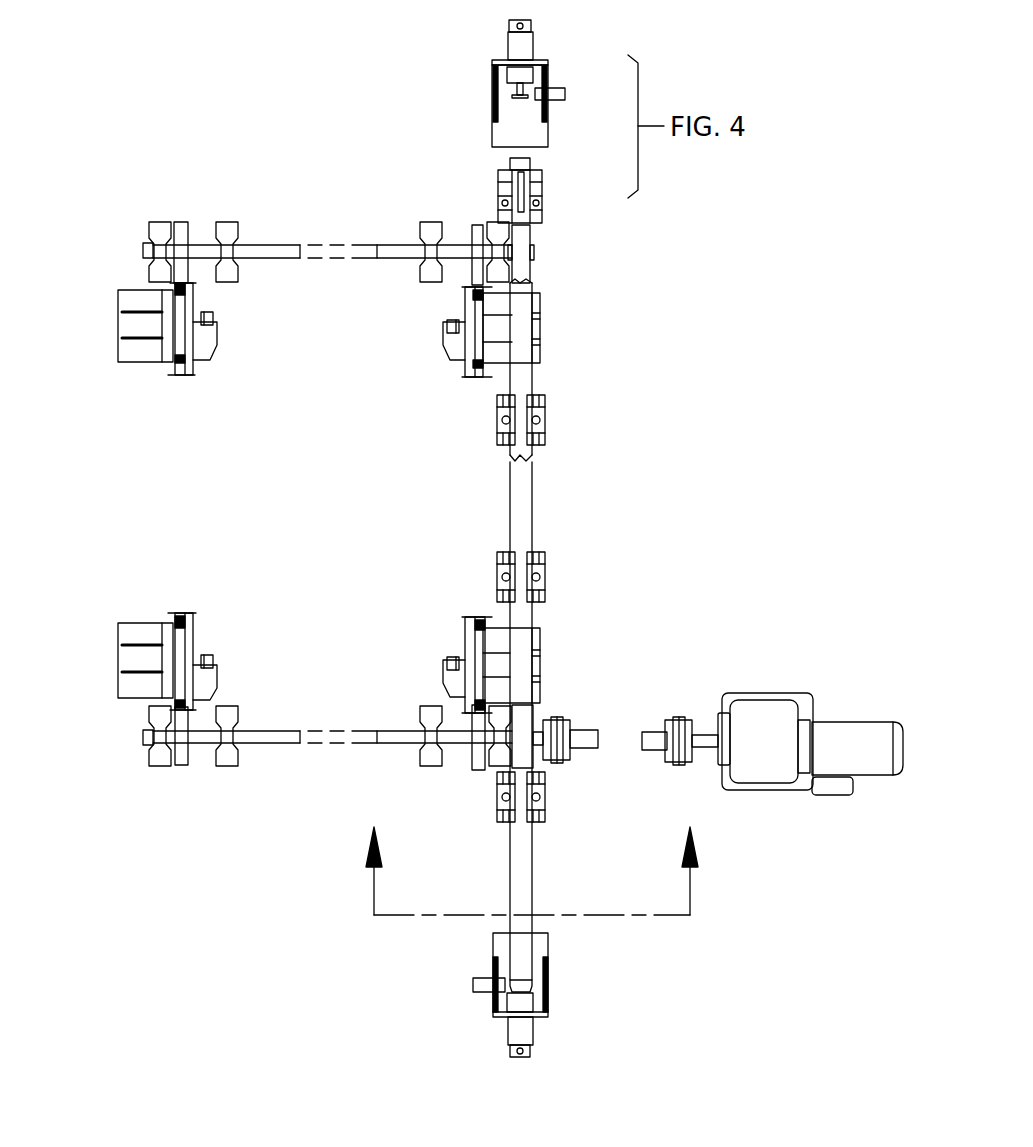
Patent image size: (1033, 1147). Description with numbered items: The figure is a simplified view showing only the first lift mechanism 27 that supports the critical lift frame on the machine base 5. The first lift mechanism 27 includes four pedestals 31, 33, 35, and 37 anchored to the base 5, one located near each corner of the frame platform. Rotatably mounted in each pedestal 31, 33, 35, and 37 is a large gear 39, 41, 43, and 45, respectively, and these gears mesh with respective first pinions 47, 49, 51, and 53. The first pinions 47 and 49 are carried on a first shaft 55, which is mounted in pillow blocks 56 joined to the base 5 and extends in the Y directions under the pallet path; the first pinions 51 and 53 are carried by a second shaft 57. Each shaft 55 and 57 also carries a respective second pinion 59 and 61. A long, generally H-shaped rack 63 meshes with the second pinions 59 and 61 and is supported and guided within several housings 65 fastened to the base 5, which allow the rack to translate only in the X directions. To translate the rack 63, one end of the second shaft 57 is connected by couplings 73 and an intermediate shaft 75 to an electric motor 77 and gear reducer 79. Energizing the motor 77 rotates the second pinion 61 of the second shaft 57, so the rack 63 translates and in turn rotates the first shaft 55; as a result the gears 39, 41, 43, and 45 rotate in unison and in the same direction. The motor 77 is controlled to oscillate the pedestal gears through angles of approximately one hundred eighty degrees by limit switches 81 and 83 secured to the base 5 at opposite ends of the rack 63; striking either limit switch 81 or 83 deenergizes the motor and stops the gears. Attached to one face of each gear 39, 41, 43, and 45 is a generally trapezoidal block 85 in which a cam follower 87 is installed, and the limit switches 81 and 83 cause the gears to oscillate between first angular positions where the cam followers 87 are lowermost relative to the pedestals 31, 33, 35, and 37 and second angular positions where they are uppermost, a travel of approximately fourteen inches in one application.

The machine base 5 is at (532, 887).
The first lift mechanism 27 is at (133, 389).
The pedestal 31 is at (135, 322).
The pedestal 33 is at (537, 335).
The pedestal 35 is at (537, 640).
The pedestal 37 is at (128, 660).
The large gear 39 is at (181, 340).
The large gear 41 is at (476, 380).
The large gear 43 is at (476, 655).
The large gear 45 is at (183, 613).
The first pinion 47 is at (181, 232).
The first pinion 49 is at (477, 228).
The first pinion 51 is at (478, 770).
The first pinion 53 is at (182, 765).
The first shaft 55 is at (261, 250).
The pillow block 56 is at (228, 226).
The second shaft 57 is at (266, 745).
The second pinion 59 is at (531, 241).
The second pinion 61 is at (547, 695).
The rack 63 is at (527, 528).
The housing 65 is at (545, 560).
The coupling 73 is at (567, 722).
The intermediate shaft 75 is at (590, 742).
The electric motor 77 is at (880, 740).
The gear reducer 79 is at (763, 720).
The limit switch 81 is at (517, 1032).
The limit switch 83 is at (525, 42).
The trapezoidal block 85 is at (207, 345).
The cam follower 87 is at (210, 320).